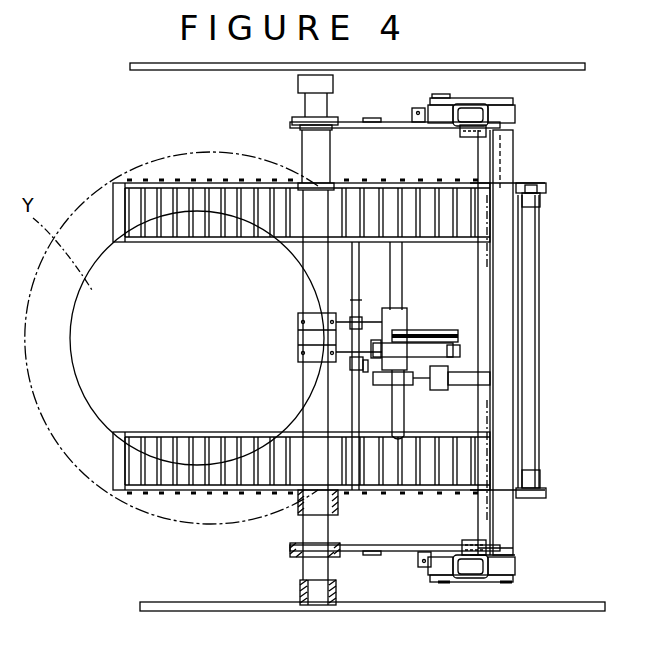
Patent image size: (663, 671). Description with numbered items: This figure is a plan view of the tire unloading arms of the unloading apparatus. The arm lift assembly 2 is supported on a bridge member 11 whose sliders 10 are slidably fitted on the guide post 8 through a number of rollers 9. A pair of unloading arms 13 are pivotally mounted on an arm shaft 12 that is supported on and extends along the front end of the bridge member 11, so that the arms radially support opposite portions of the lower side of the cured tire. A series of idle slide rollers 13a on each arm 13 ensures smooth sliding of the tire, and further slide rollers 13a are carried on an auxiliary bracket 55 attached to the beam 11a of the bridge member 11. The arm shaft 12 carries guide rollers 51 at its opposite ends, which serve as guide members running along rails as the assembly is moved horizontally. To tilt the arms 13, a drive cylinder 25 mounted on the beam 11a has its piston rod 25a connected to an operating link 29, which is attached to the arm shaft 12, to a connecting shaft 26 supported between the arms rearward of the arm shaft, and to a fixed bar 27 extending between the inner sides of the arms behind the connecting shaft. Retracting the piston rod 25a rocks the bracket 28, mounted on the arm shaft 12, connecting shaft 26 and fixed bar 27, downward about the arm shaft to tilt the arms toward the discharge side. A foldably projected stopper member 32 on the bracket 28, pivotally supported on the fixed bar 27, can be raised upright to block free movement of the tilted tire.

The arm lift assembly 2 is at (526, 548).
The guide post 8 is at (476, 110).
The rollers 9 is at (440, 105).
The sliders 10 is at (470, 98).
The bridge member 11 is at (392, 122).
The beam 11a is at (513, 530).
The arm shaft 12 is at (305, 298).
The unloading arms 13 is at (222, 183).
The idle slide rollers 13a is at (200, 233).
The drive cylinder 25 is at (463, 386).
The piston rod 25a is at (418, 386).
The connecting shaft 26 is at (362, 286).
The fixed bar 27 is at (400, 298).
The bracket 28 is at (370, 340).
The operating link 29 is at (396, 382).
The stopper member 32 is at (396, 334).
The guide rollers 51 is at (300, 82).
The auxiliary bracket 55 is at (526, 184).